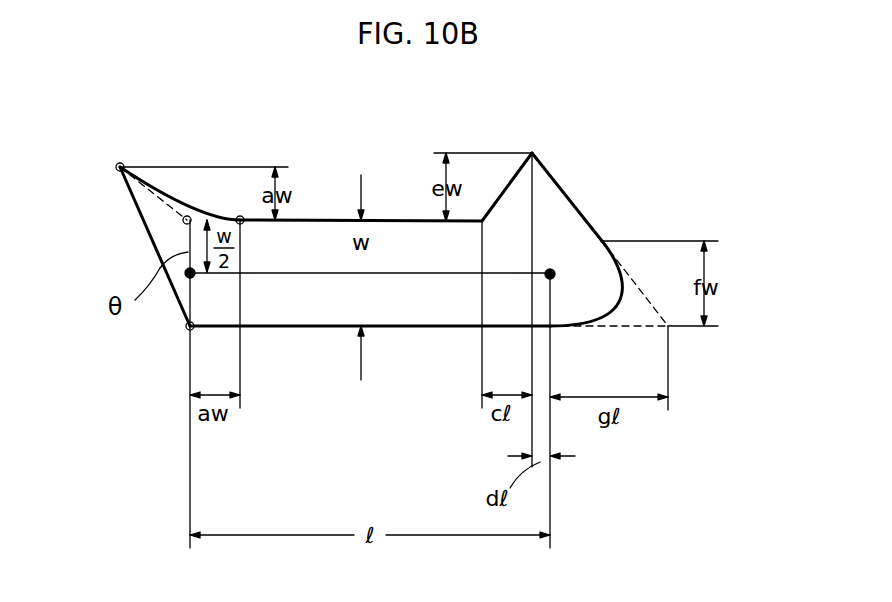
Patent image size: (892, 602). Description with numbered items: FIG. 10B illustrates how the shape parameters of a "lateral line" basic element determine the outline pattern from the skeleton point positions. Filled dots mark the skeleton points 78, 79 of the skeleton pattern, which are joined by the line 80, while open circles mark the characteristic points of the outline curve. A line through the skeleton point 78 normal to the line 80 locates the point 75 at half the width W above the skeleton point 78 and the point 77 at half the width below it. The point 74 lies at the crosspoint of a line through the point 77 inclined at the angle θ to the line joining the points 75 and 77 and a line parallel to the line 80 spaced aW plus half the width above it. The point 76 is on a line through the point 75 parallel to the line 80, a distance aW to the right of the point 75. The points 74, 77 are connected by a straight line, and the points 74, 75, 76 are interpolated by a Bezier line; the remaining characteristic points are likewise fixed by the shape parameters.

The characteristic point 74 is at (121, 163).
The characteristic point 75 is at (188, 216).
The characteristic point 76 is at (241, 216).
The characteristic point 77 is at (187, 329).
The skeleton point 78 is at (195, 276).
The skeleton point 79 is at (552, 270).
The line connecting the skeleton points 80 is at (428, 276).